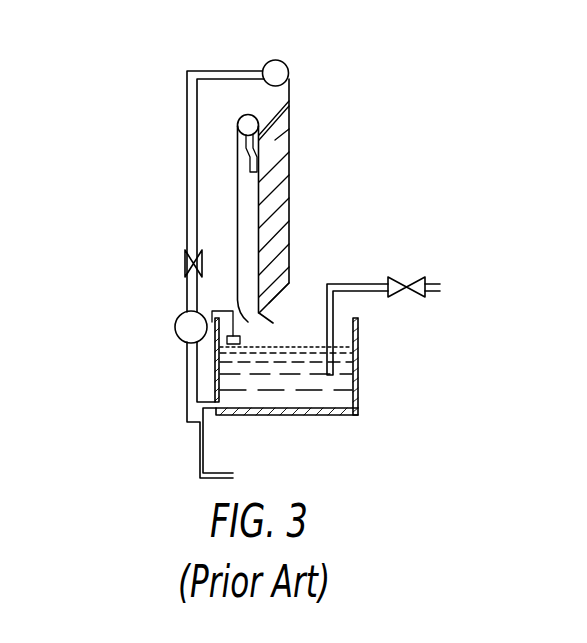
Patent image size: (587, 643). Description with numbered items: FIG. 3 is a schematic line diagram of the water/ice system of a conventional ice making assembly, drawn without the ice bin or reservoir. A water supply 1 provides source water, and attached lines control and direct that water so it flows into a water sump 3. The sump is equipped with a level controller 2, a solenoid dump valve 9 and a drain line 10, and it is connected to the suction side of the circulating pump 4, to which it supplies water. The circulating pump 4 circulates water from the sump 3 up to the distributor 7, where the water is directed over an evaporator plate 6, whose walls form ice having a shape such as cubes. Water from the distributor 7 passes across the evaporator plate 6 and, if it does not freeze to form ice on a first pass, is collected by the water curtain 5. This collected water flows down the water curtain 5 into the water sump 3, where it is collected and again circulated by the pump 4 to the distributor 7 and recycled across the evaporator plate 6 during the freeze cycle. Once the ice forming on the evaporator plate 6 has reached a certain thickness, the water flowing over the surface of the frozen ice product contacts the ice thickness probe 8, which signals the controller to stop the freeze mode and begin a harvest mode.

The water supply 1 is at (397, 323).
The level controller 2 is at (218, 310).
The water sump 3 is at (359, 355).
The circulating pump 4 is at (176, 325).
The water curtain 5 is at (237, 207).
The evaporator plate 6 is at (273, 115).
The distributor 7 is at (283, 60).
The ice thickness probe 8 is at (247, 168).
The solenoid dump valve 9 is at (186, 260).
The drain line 10 is at (198, 463).